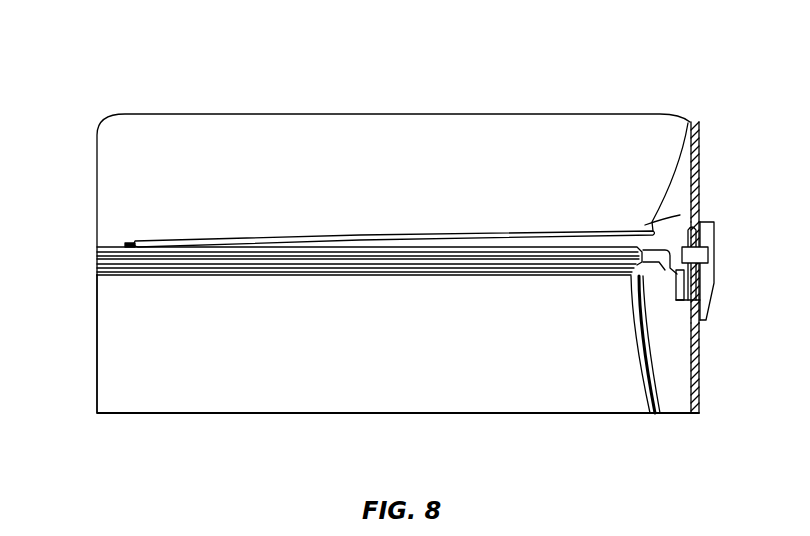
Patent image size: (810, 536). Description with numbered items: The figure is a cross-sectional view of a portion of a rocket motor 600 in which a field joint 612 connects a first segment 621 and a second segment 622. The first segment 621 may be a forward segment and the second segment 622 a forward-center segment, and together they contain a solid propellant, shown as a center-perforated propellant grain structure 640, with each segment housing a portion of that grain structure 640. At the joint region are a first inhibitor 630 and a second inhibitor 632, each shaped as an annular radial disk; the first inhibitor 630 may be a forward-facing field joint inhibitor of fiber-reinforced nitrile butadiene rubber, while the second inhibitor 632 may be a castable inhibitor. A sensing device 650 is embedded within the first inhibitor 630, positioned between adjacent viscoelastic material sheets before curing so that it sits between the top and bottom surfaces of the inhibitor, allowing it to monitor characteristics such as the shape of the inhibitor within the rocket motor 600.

The rocket motor 600 is at (552, 83).
The field joint 612 is at (730, 242).
The first segment 621 is at (88, 160).
The second segment 622 is at (87, 331).
The first inhibitor 630 is at (233, 240).
The second inhibitor 632 is at (145, 272).
The center-perforated propellant grain structure 640 is at (467, 148).
The sensing device 650 is at (130, 243).